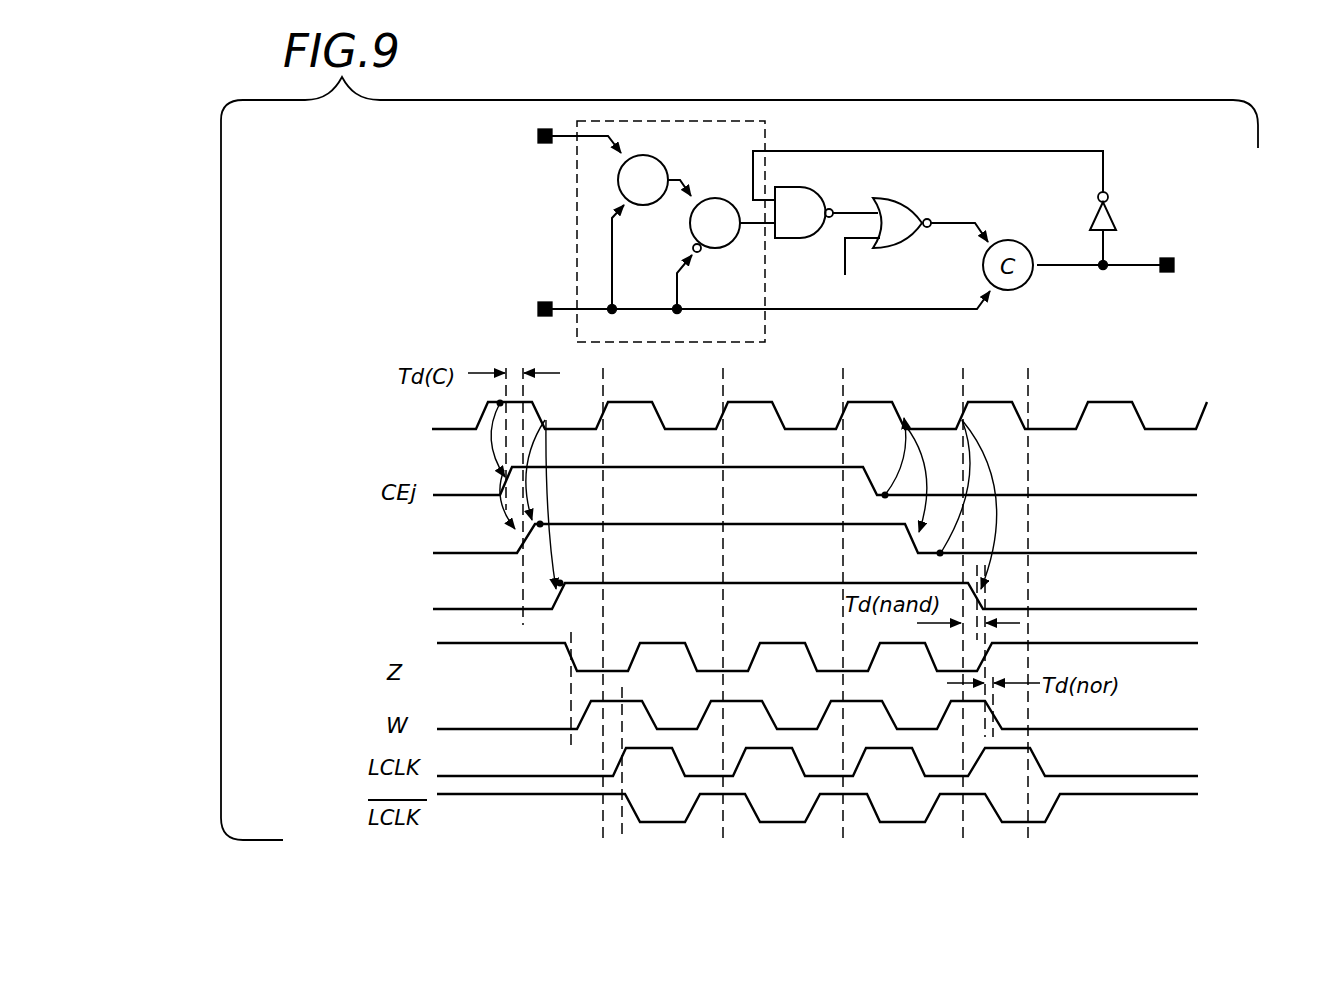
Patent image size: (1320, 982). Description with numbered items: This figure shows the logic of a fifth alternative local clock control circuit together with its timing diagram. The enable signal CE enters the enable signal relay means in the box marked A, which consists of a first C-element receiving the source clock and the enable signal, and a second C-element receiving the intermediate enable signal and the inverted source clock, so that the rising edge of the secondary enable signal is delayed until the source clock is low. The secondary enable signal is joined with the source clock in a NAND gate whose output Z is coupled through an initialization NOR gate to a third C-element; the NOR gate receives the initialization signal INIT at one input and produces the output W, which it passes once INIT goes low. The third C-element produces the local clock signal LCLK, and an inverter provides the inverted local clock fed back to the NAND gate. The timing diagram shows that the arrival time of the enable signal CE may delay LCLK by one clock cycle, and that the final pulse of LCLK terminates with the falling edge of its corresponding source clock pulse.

The enable signal relay means A is at (676, 232).
The enable signal CE is at (557, 138).
The NAND gate output Z is at (826, 211).
The NOR gate output W is at (937, 223).
The initialization signal INIT is at (866, 274).
The local clock signal LCLK is at (917, 113).